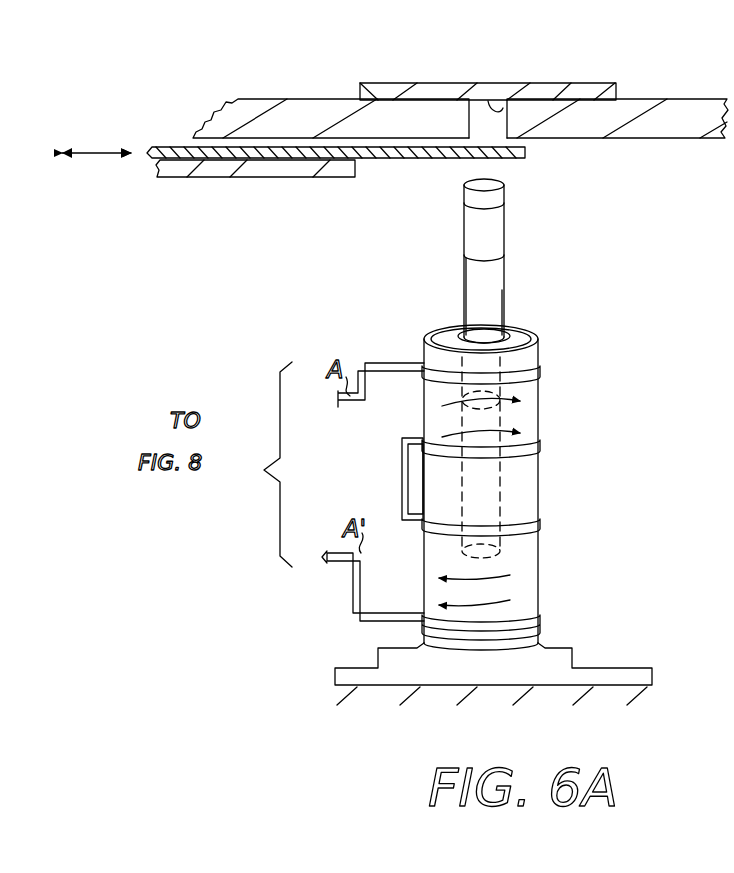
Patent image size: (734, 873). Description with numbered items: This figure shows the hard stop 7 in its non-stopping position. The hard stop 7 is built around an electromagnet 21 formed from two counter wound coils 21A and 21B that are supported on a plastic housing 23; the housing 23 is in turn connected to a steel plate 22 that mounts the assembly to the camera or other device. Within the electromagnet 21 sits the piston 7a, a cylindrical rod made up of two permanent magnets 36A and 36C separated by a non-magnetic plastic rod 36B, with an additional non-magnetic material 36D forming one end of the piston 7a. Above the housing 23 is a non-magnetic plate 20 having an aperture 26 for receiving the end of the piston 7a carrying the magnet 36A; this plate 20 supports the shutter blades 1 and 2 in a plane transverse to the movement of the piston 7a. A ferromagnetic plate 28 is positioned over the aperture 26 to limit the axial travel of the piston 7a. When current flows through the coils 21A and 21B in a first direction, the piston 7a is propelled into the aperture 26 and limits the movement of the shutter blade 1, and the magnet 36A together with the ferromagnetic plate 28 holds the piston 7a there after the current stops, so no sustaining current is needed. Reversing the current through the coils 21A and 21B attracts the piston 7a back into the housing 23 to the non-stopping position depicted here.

The shutter blade 1 is at (526, 151).
The shutter blade 2 is at (259, 166).
The hard stop 7 is at (480, 258).
The piston 7a is at (473, 292).
The non-magnetic plate 20 is at (322, 108).
The electromagnet 21 is at (532, 471).
The coil 21A is at (539, 508).
The coil 21B is at (539, 418).
The steel plate 22 is at (598, 668).
The plastic housing 23 is at (515, 326).
The aperture 26 is at (500, 112).
The ferromagnetic plate 28 is at (476, 86).
The permanent magnet 36A is at (505, 226).
The plastic rod 36B is at (490, 279).
The permanent magnet 36C is at (487, 511).
The non-magnetic material 36D is at (470, 198).